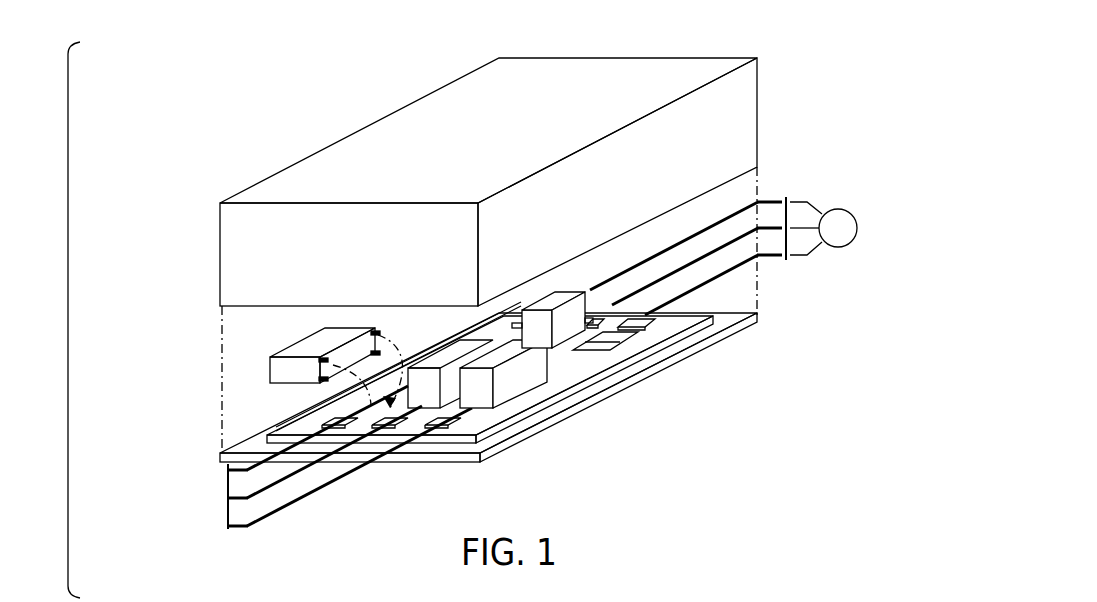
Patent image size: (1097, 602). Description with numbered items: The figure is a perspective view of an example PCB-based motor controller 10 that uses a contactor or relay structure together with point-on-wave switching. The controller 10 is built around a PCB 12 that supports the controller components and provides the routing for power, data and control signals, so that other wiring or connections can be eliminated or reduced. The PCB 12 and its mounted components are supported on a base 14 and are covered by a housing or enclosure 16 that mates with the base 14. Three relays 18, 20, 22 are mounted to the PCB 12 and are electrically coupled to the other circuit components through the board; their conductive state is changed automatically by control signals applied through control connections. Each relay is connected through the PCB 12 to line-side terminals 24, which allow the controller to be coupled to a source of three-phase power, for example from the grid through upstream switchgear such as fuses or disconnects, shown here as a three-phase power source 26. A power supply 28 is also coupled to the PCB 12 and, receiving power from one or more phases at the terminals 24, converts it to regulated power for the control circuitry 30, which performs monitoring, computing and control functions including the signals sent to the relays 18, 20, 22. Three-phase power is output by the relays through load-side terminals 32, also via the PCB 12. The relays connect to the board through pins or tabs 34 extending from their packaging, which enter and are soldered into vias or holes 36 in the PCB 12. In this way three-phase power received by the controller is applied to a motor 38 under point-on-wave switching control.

The motor controller 10 is at (764, 36).
The PCB 12 is at (570, 367).
The base 14 is at (583, 412).
The housing or enclosure 16 is at (363, 147).
The relay 18 is at (277, 372).
The relay 20 is at (448, 355).
The relay 22 is at (508, 387).
The line-side terminals 24 is at (443, 426).
The three-phase power source 26 is at (128, 588).
The power supply 28 is at (553, 303).
The control circuitry 30 is at (618, 334).
The load-side terminals 32 is at (637, 318).
The pins or tabs 34 is at (323, 358).
The vias or holes 36 is at (368, 387).
The motor 38 is at (838, 247).